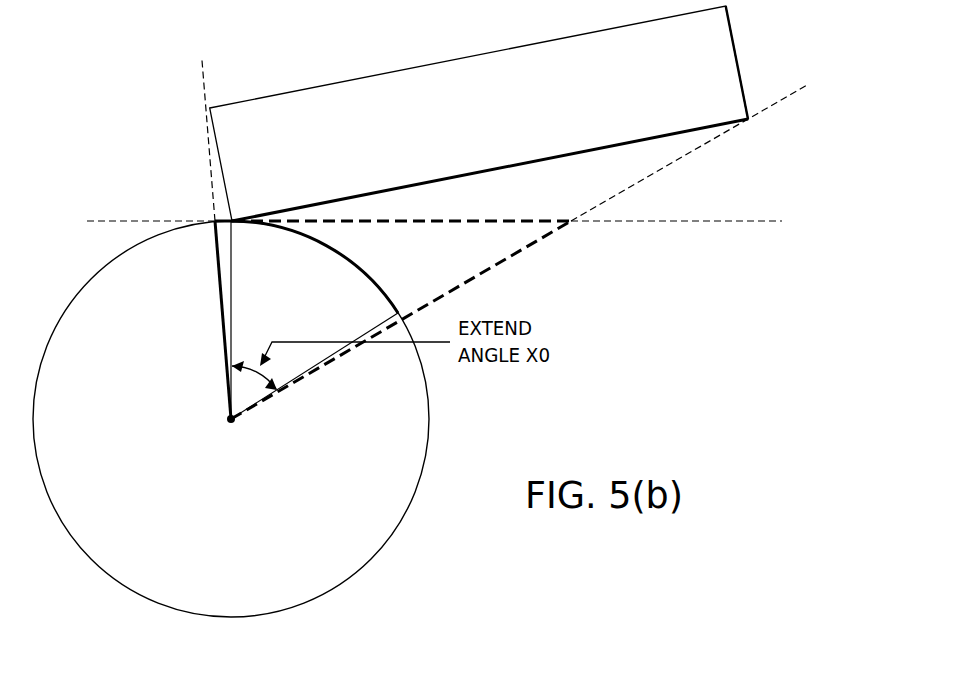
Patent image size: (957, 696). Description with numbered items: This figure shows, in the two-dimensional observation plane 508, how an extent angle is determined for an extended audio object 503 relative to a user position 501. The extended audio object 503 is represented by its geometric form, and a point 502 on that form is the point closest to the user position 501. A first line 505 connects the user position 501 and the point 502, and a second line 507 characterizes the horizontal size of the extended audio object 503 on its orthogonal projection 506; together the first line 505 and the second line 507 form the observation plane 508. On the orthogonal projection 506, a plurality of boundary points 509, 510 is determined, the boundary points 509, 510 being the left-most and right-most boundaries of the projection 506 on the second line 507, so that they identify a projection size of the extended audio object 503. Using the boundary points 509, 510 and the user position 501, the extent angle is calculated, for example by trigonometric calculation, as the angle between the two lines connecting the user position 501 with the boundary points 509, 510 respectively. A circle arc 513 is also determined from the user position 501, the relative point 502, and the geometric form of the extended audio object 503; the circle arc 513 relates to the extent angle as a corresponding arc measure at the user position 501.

The user position 501 is at (220, 420).
The point 502 is at (235, 217).
The extended audio object 503 is at (499, 128).
The first line 505 is at (232, 297).
The orthogonal projection 506 is at (733, 220).
The second line 507 is at (430, 225).
The plane 508 is at (142, 220).
The boundary point 509 is at (210, 228).
The boundary point 510 is at (573, 223).
The circle arc 513 is at (390, 258).